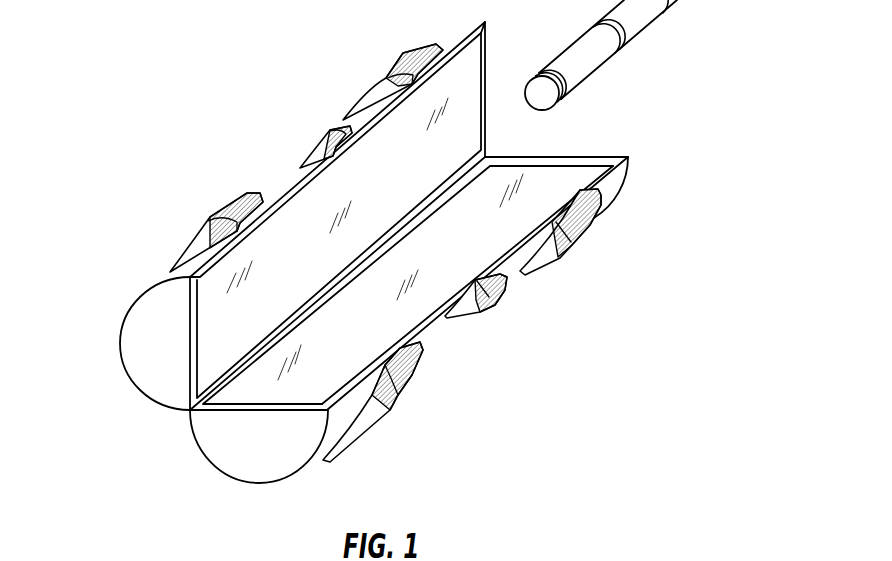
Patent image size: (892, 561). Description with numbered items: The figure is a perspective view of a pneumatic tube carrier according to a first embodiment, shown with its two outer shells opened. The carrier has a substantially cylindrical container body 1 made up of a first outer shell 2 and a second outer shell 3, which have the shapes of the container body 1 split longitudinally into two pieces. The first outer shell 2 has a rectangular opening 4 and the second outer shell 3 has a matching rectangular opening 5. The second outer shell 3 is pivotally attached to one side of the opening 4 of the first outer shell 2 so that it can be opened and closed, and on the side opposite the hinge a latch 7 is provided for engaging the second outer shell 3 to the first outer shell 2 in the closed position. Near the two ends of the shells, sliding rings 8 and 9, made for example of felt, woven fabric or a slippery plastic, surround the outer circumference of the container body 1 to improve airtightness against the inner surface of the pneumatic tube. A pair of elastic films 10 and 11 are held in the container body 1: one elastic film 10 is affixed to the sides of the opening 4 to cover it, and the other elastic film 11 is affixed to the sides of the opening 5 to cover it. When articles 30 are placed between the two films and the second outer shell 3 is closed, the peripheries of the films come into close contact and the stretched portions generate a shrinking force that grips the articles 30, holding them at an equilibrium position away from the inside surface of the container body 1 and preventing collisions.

The container body 1 is at (184, 440).
The first outer shell 2 is at (307, 468).
The second outer shell 3 is at (127, 307).
The rectangular opening 4 is at (417, 258).
The rectangular opening 5 is at (365, 208).
The latch 7 is at (323, 150).
The sliding ring 8 is at (390, 67).
The sliding ring 9 is at (217, 217).
The elastic film 10 is at (447, 318).
The elastic film 11 is at (300, 187).
The article 30 is at (587, 68).